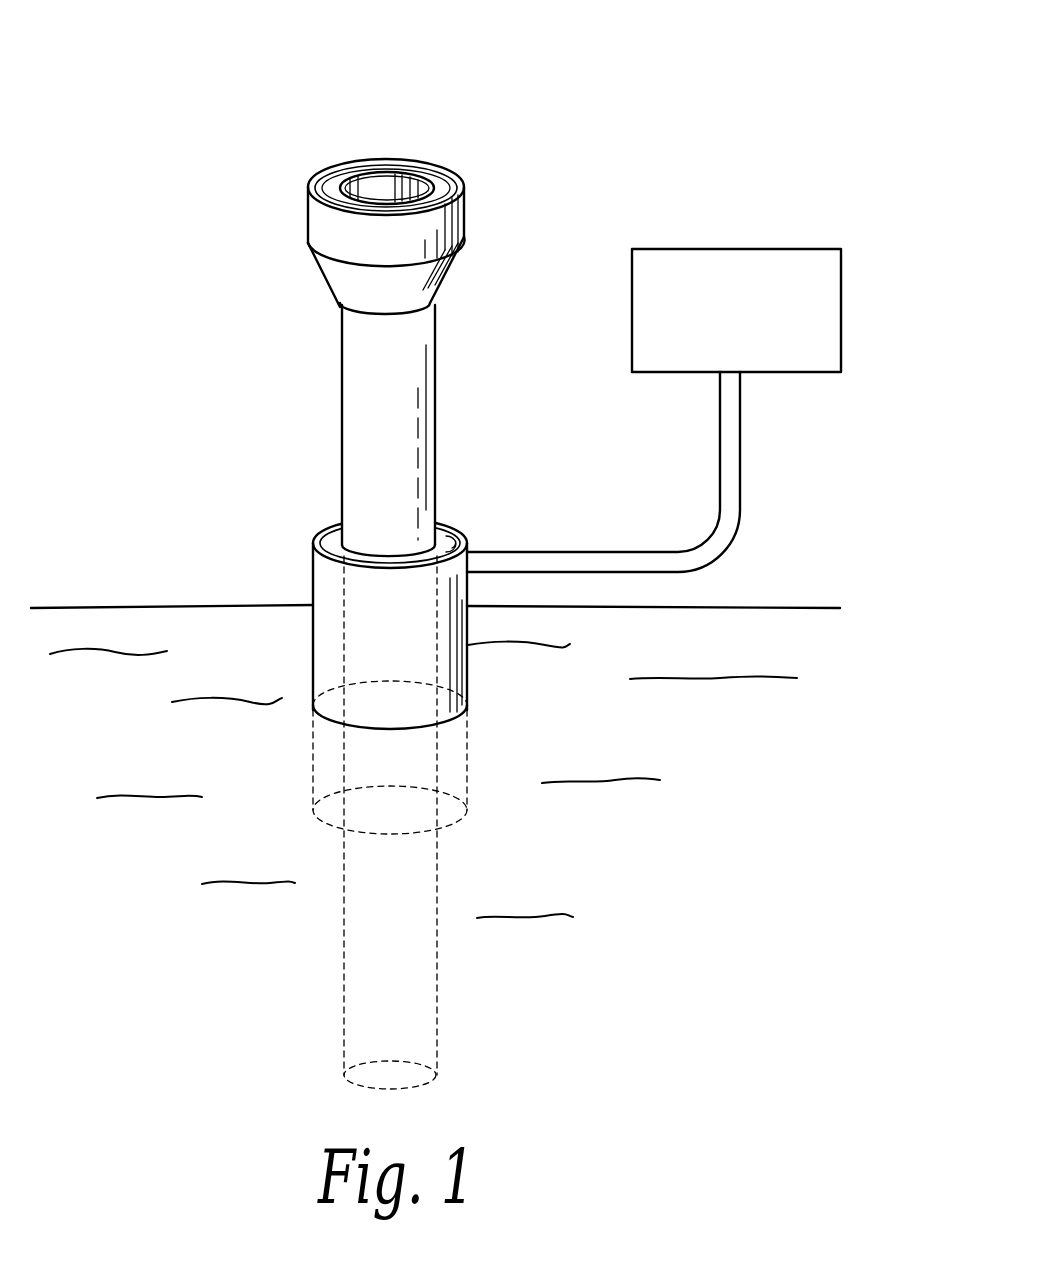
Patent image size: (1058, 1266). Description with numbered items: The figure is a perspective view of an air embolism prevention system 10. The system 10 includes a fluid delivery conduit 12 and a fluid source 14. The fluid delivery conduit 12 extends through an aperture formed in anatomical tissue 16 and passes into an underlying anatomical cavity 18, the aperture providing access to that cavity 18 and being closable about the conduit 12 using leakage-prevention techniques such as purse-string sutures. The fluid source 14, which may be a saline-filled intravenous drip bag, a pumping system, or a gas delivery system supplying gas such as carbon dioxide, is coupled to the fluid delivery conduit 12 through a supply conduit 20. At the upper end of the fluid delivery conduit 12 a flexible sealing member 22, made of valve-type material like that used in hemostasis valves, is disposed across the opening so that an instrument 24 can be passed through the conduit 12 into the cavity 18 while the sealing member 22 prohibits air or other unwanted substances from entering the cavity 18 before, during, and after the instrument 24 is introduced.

The air embolism prevention system 10 is at (592, 190).
The fluid delivery conduit 12 is at (315, 580).
The fluid source 14 is at (735, 249).
The anatomical tissue 16 is at (742, 608).
The anatomical cavity 18 is at (652, 860).
The supply conduit 20 is at (742, 484).
The flexible sealing member 22 is at (330, 535).
The instrument 24 is at (330, 230).